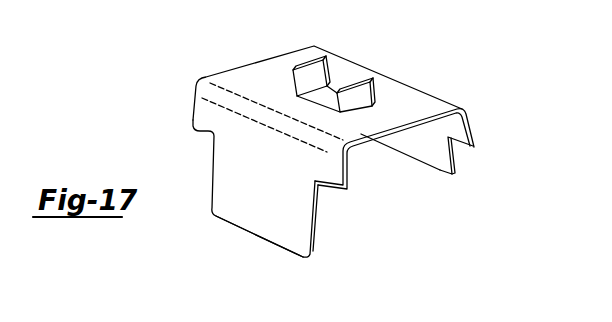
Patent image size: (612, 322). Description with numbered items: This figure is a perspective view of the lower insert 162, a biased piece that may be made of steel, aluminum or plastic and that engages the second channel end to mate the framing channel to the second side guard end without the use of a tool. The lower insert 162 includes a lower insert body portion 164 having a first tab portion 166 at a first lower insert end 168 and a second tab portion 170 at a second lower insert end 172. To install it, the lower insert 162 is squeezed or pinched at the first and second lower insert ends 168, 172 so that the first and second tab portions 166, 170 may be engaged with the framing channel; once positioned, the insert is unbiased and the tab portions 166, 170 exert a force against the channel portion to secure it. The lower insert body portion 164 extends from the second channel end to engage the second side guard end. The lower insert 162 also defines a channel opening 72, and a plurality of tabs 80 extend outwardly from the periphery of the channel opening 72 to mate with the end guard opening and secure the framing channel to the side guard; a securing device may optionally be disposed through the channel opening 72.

The lower insert 162 is at (328, 152).
The lower insert body portion 164 is at (407, 126).
The first tab portion 166 is at (247, 181).
The first lower insert end 168 is at (255, 243).
The second tab portion 170 is at (387, 145).
The second lower insert end 172 is at (441, 173).
The tab 80 is at (296, 70).
The channel opening 72 is at (334, 88).